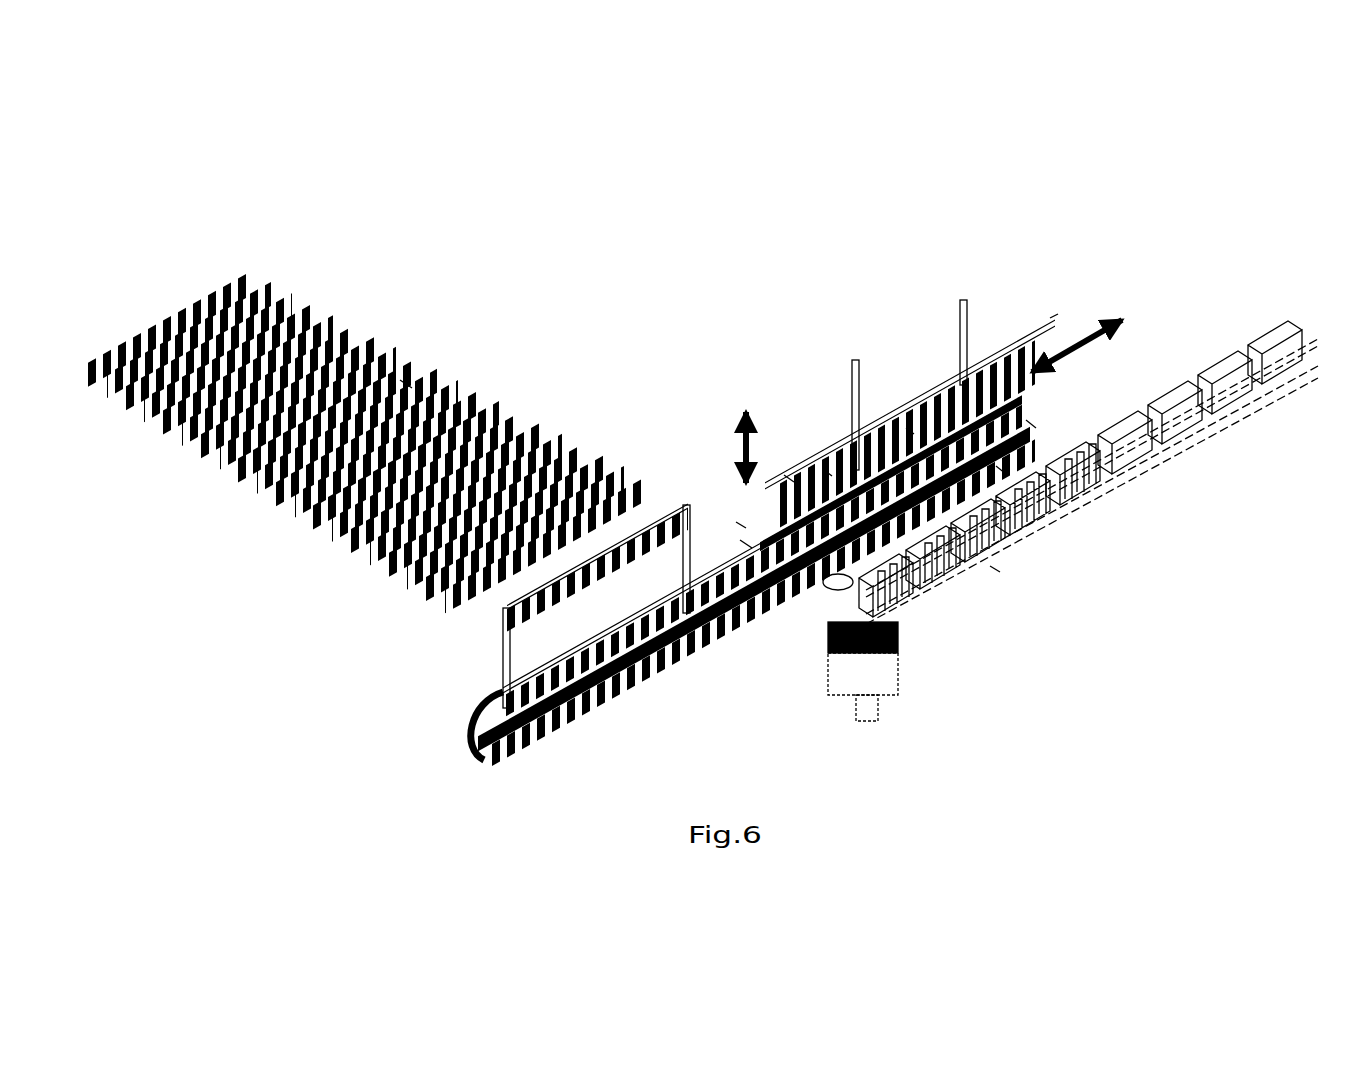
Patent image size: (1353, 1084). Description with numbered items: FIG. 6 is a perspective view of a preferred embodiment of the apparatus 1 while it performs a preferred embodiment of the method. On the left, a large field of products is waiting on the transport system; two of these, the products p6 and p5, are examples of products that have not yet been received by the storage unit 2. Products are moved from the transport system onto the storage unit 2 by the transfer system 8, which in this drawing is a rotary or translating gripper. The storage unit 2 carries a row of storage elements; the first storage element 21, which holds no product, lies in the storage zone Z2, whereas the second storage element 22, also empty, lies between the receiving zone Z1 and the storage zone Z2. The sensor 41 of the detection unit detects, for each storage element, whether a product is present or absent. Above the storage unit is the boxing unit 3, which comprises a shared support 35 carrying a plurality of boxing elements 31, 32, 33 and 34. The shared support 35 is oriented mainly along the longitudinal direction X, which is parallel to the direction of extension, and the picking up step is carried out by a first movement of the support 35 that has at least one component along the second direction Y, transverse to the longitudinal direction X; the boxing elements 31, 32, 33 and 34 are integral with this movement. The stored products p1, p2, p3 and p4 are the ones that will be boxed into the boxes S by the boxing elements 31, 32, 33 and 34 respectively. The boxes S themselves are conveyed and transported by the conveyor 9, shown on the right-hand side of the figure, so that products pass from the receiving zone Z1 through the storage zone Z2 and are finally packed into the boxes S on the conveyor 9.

The apparatus 1 is at (425, 754).
The storage unit 2 is at (470, 710).
The boxing unit 3 is at (959, 329).
The transfer system 8 is at (495, 640).
The conveyor 9 is at (997, 568).
The first storage element 21 is at (1040, 430).
The second storage element 22 is at (748, 545).
The boxing element 31 is at (1052, 312).
The boxing element 32 is at (935, 392).
The boxing element 33 is at (880, 445).
The boxing element 34 is at (788, 478).
The shared support 35 is at (1027, 385).
The sensor 41 is at (740, 525).
The product p1 is at (1010, 430).
The product p2 is at (1000, 470).
The product p3 is at (910, 430).
The product p4 is at (828, 475).
The product p5 is at (405, 385).
The product p6 is at (276, 345).
The box S is at (1095, 483).
The longitudinal direction X is at (1088, 342).
The second direction Y is at (731, 428).
The receiving zone Z1 is at (625, 655).
The storage zone Z2 is at (880, 520).